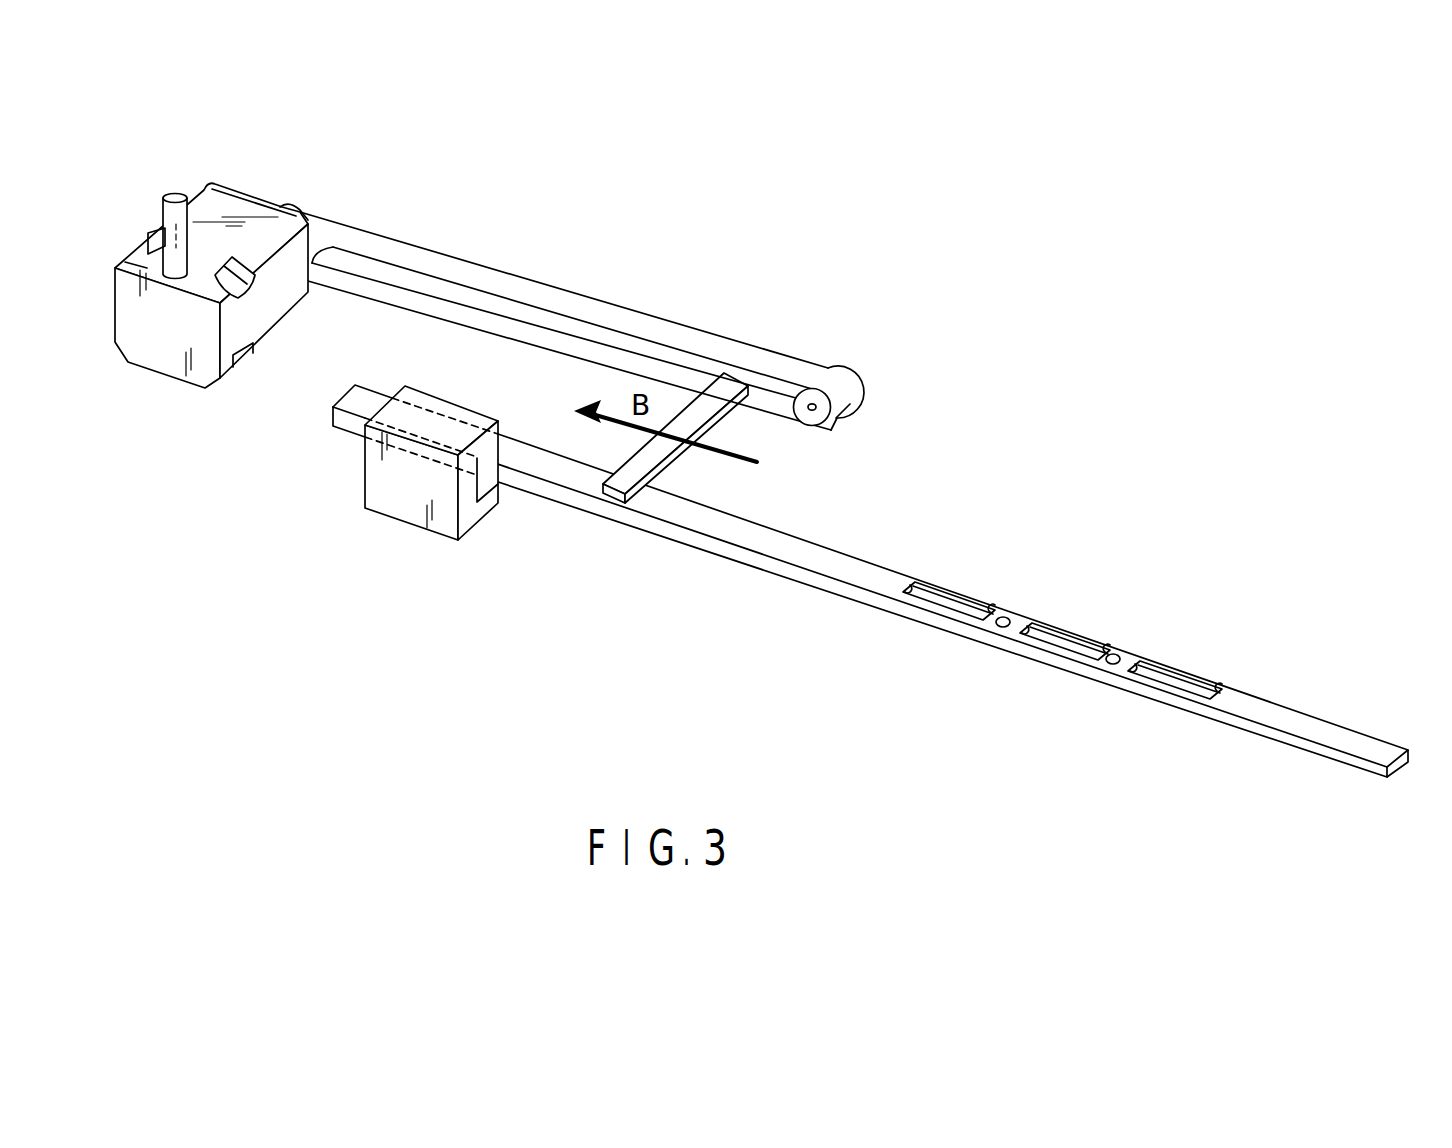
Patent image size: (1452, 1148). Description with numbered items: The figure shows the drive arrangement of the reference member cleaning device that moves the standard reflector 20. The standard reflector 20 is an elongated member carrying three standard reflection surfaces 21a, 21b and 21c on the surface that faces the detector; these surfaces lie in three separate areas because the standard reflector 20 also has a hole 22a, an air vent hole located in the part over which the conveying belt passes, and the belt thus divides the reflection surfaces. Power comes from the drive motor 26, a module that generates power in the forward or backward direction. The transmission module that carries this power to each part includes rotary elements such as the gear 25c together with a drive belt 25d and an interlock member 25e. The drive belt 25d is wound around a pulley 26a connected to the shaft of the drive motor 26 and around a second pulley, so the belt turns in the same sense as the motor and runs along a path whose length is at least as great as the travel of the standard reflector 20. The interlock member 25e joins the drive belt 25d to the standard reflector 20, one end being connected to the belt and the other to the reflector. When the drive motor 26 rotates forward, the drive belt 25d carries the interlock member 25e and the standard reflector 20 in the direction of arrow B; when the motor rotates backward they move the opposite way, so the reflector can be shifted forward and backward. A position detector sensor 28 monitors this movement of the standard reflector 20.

The standard reflector 20 is at (1307, 712).
The standard reflection surface 21a is at (1167, 677).
The standard reflection surface 21b is at (1055, 640).
The standard reflection surface 21c is at (953, 602).
The hole 22a is at (1003, 617).
The gear 25c is at (810, 402).
The drive belt 25d is at (548, 298).
The interlock member 25e is at (673, 465).
The drive motor 26 is at (245, 210).
The pulley 26a is at (300, 210).
The position detector sensor 28 is at (403, 500).